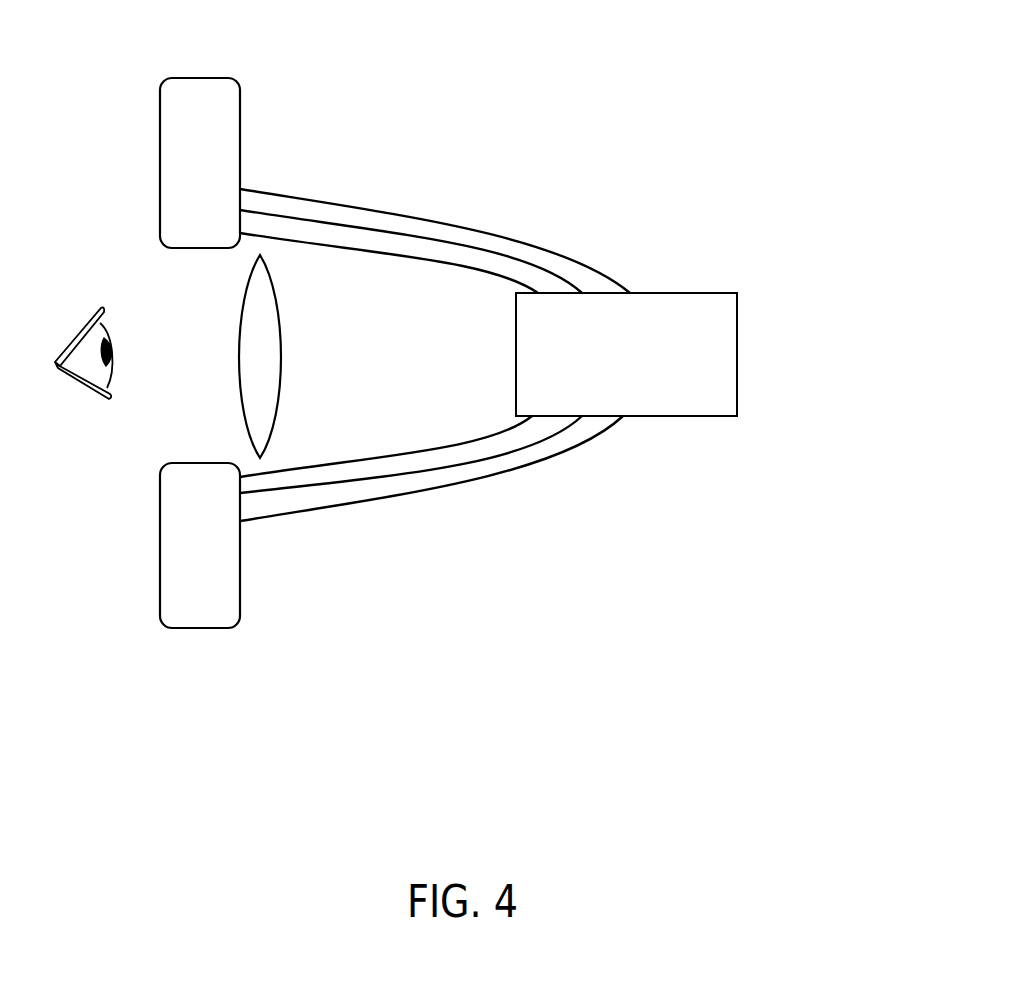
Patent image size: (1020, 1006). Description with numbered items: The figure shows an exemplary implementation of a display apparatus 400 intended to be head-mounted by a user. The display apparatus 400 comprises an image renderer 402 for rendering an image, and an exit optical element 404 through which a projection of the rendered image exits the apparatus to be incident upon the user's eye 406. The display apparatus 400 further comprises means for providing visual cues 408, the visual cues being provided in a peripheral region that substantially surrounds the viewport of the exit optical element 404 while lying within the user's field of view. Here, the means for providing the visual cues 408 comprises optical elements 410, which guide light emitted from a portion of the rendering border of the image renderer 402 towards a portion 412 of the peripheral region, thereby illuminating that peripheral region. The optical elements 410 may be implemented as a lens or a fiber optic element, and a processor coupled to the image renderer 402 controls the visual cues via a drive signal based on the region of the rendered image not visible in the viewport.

The display apparatus 400 is at (582, 64).
The image renderer 402 is at (609, 353).
The exit optical element 404 is at (292, 325).
The user's eye 406 is at (80, 385).
The visual cues 408 is at (510, 211).
The optical elements 410 is at (515, 257).
The portion of peripheral region 412 is at (240, 148).